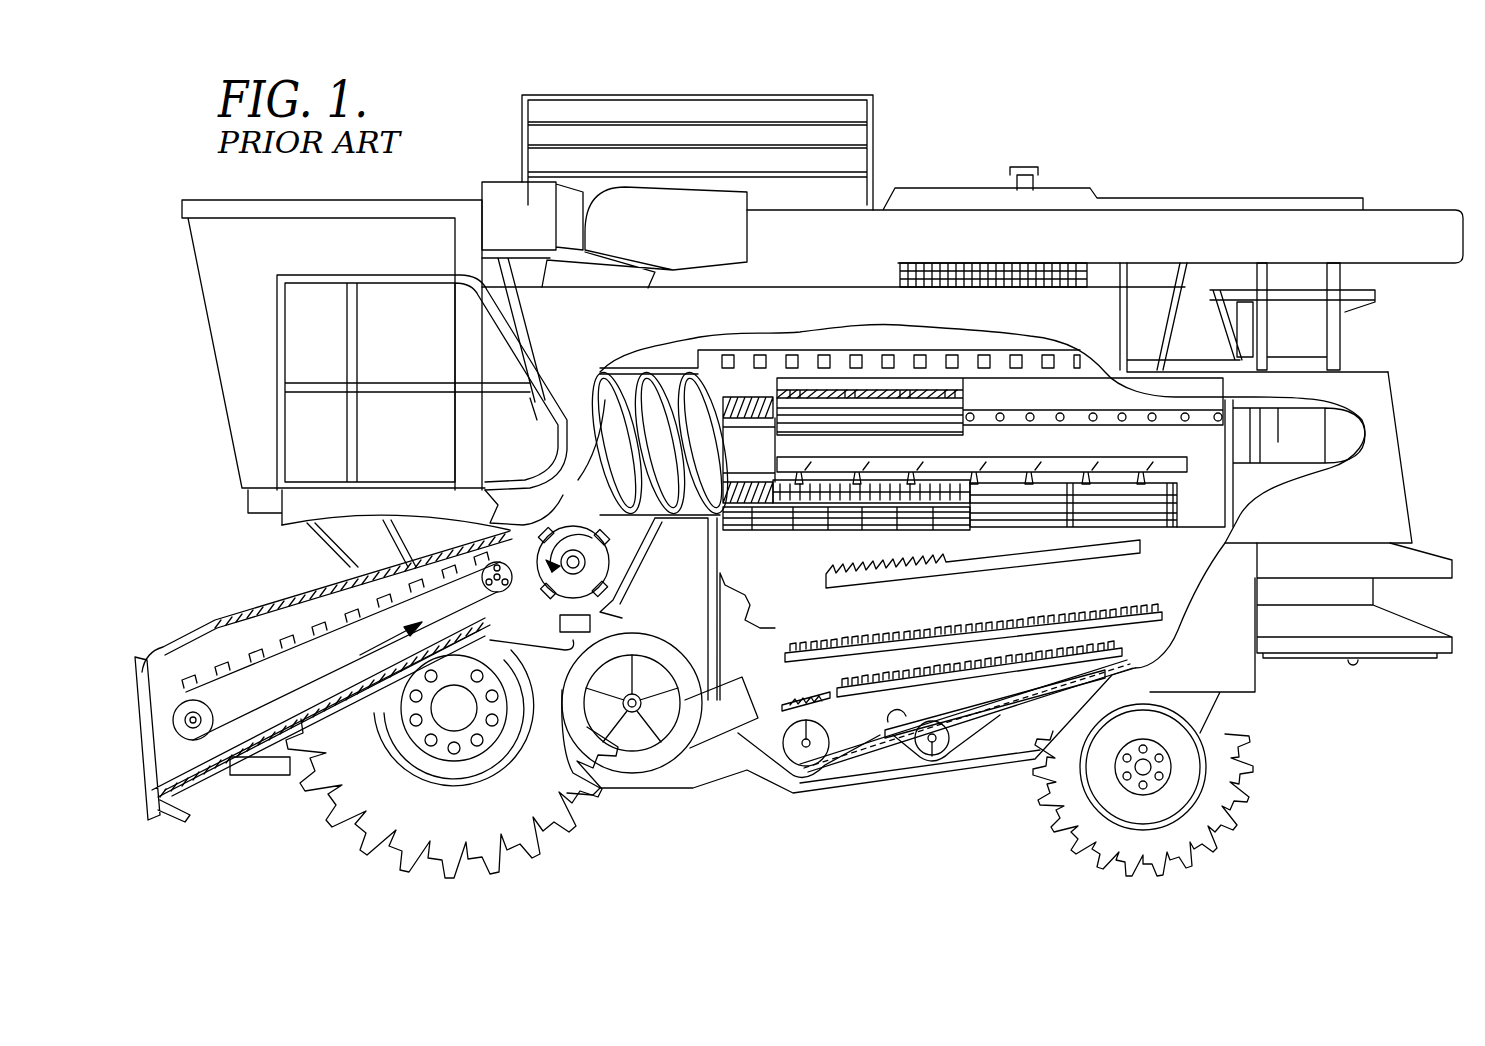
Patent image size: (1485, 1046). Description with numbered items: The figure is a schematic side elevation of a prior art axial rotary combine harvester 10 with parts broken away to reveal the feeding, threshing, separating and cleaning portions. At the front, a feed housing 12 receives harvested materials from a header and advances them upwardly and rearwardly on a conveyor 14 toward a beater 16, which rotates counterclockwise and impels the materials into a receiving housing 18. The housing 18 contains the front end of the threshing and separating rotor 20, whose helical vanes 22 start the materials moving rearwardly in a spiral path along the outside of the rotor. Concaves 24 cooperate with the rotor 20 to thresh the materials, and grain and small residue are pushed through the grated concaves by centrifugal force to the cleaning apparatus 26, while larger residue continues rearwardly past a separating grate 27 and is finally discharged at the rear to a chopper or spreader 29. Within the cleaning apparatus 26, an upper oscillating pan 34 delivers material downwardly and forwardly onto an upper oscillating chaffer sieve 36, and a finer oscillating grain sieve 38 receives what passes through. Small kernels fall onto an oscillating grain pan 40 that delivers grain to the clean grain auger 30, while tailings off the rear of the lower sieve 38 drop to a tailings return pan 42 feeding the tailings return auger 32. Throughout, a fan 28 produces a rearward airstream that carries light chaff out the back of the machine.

The combine harvester 10 is at (962, 140).
The feed housing 12 is at (215, 625).
The conveyor 14 is at (295, 705).
The beater 16 is at (565, 592).
The receiving housing 18 is at (680, 525).
The threshing and separating rotor 20 is at (1013, 378).
The helical vanes 22 is at (670, 390).
The concaves 24 is at (840, 520).
The cleaning apparatus 26 is at (808, 606).
The separating grate 27 is at (1155, 522).
The fan 28 is at (663, 755).
The chopper or spreader 29 is at (1400, 660).
The clean grain auger 30 is at (810, 762).
The tailings return auger 32 is at (942, 752).
The upper oscillating pan 34 is at (1000, 565).
The upper oscillating chaffer sieve 36 is at (865, 648).
The oscillating grain sieve 38 is at (830, 690).
The oscillating grain pan 40 is at (880, 720).
The tailings return pan 42 is at (1135, 665).